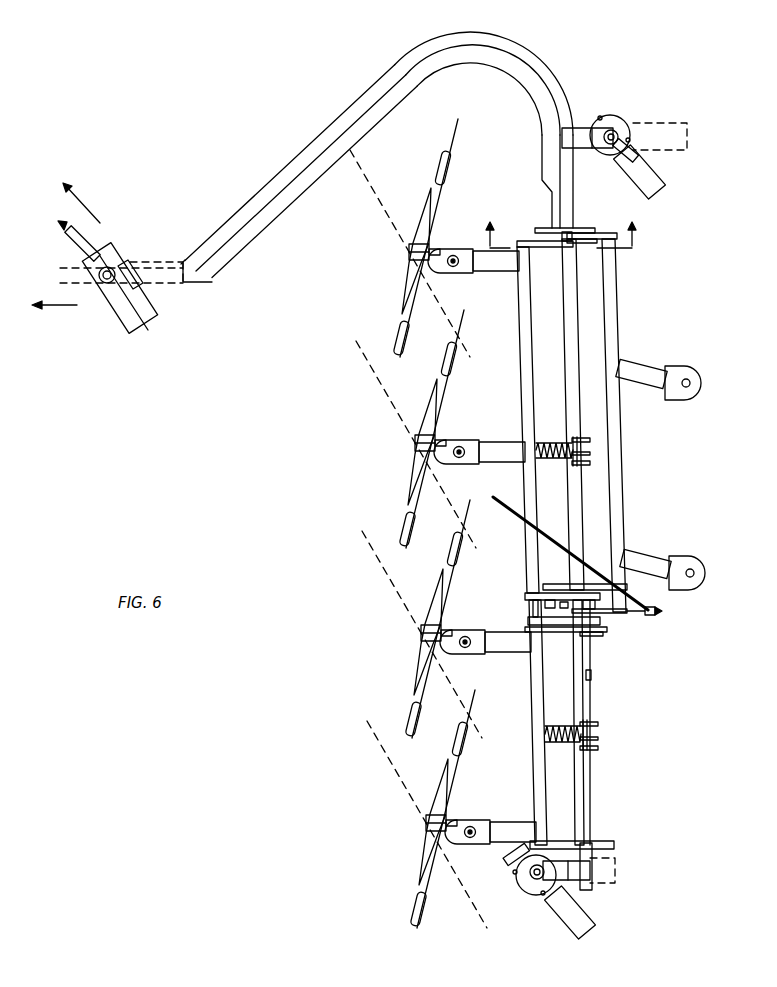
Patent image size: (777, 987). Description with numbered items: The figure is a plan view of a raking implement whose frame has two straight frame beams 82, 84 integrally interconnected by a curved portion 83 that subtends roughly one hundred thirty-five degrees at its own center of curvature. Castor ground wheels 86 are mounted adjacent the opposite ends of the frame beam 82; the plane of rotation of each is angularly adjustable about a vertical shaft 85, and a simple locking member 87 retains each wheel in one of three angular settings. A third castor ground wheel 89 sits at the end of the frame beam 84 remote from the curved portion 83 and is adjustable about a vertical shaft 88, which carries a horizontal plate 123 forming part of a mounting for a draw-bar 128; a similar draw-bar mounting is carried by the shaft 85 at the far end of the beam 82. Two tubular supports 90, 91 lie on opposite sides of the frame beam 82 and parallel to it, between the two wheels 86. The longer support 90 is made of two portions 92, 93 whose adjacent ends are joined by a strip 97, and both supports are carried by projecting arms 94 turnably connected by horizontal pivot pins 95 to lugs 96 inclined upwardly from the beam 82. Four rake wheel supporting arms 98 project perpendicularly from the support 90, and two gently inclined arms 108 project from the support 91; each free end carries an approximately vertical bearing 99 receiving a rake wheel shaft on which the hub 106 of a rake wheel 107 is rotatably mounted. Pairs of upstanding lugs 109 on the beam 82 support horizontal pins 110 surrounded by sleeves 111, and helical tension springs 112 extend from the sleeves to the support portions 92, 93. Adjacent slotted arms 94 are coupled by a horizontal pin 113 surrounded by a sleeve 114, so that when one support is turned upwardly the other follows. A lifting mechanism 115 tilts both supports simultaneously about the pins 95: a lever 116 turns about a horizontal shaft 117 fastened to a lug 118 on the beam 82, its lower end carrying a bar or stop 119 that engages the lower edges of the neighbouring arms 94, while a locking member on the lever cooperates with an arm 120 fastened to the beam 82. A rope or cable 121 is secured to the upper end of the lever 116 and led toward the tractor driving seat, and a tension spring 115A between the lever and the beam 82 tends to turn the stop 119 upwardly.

The frame beam 82 is at (570, 300).
The curved portion 83 is at (455, 40).
The frame beam 84 is at (305, 157).
The vertical shaft 85 is at (635, 125).
The castor ground wheel 86 is at (660, 167).
The locking member 87 is at (612, 118).
The vertical shaft 88 is at (122, 292).
The castor ground wheel 89 is at (163, 303).
The tubular support 90 is at (517, 361).
The tubular support 91 is at (615, 318).
The support portion 92 is at (535, 697).
The support portion 93 is at (523, 325).
The projecting arm 94 is at (520, 243).
The horizontal pivot pin 95 is at (532, 228).
The lug 96 is at (563, 230).
The strip 97 is at (532, 622).
The rake wheel supporting arm 98 is at (498, 272).
The vertical bearing 99 is at (688, 378).
The hub 106 is at (412, 245).
The rake wheel 107 is at (402, 262).
The rake wheel supporting arm 108 is at (645, 372).
The upstanding lug 109 is at (581, 437).
The horizontal pin 110 is at (590, 466).
The sleeve 111 is at (592, 447).
The helical tension spring 112 is at (553, 460).
The horizontal pin 113 is at (575, 204).
The sleeve 114 is at (541, 250).
The lifting mechanism 115 is at (662, 612).
The tension spring 115A is at (591, 675).
The lever 116 is at (660, 590).
The horizontal shaft 117 is at (583, 582).
The lug 118 is at (546, 632).
The bar or stop 119 is at (535, 612).
The arm 120 is at (620, 630).
The rope, cable or the like 121 is at (500, 484).
The horizontal plate 123 is at (108, 265).
The draw-bar 128 is at (68, 241).